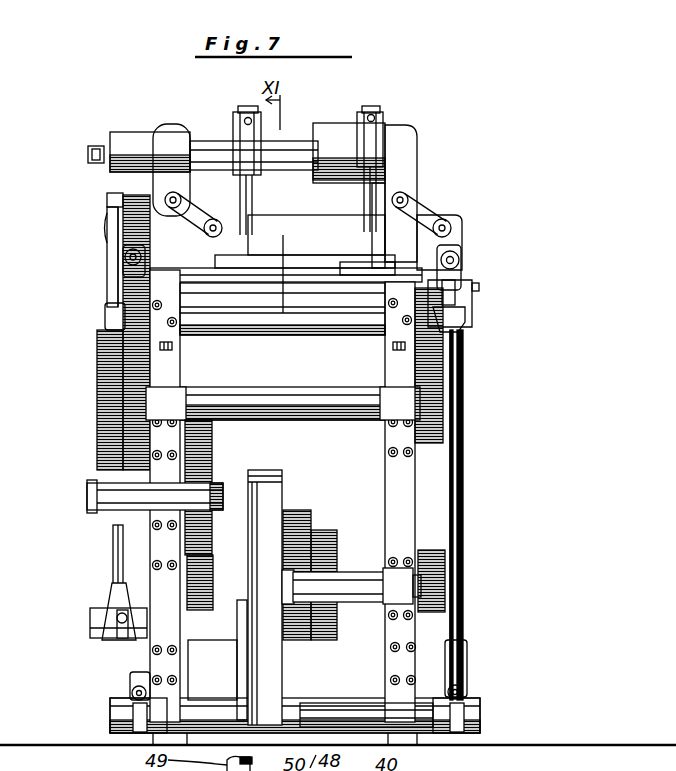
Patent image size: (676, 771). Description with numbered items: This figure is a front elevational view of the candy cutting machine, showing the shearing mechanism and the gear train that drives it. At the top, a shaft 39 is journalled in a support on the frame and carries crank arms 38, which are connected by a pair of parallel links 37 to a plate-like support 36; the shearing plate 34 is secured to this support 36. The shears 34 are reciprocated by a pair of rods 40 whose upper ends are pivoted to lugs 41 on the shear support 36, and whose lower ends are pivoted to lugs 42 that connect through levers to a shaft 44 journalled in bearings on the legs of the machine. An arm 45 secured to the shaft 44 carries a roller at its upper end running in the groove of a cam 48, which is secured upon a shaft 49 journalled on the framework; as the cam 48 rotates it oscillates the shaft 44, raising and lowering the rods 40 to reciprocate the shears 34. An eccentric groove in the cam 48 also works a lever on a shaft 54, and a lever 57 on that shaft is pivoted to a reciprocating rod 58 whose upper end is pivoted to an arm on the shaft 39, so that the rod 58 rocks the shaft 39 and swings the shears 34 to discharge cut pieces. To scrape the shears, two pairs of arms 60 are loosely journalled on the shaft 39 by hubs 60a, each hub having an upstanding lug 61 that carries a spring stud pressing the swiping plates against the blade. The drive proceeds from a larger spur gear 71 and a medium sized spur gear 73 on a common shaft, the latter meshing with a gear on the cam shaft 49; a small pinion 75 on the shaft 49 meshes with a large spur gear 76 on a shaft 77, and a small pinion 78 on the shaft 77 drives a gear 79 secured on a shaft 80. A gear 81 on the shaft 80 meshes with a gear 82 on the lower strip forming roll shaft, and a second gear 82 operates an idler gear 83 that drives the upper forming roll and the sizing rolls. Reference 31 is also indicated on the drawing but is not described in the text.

The cross shaft 31 is at (282, 309).
The shearing plate 34 is at (308, 263).
The plate-like support 36 is at (285, 220).
The parallel links 37 is at (196, 232).
The crank arms 38 is at (167, 150).
The shaft 39 is at (290, 143).
The rods 40 is at (463, 470).
The lugs 41 is at (123, 265).
The lugs 42 is at (130, 708).
The shaft 44 is at (338, 704).
The arm 45 is at (240, 657).
The cam 48 is at (276, 468).
The shaft 49 is at (346, 588).
The shaft 54 is at (98, 630).
The lever 57 is at (122, 602).
The reciprocating rod 58 is at (110, 211).
The arms 60 is at (247, 210).
The hubs 60a is at (366, 136).
The upstanding lug 61 is at (250, 108).
The spur gear 71 is at (296, 512).
The spur gear 73 is at (325, 532).
The pinion 75 is at (210, 570).
The spur gear 76 is at (212, 447).
The shaft 77 is at (216, 490).
The pinion 78 is at (98, 493).
The gear 79 is at (105, 360).
The shaft 80 is at (287, 397).
The gear 81 is at (442, 408).
The gear 82 is at (107, 327).
The idler gear 83 is at (120, 298).